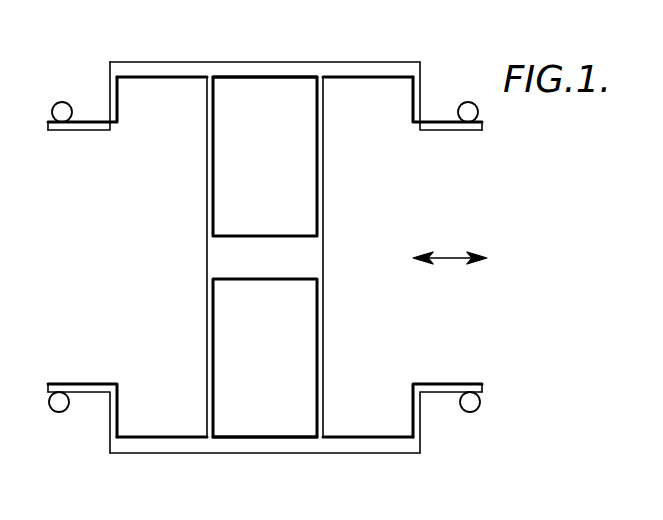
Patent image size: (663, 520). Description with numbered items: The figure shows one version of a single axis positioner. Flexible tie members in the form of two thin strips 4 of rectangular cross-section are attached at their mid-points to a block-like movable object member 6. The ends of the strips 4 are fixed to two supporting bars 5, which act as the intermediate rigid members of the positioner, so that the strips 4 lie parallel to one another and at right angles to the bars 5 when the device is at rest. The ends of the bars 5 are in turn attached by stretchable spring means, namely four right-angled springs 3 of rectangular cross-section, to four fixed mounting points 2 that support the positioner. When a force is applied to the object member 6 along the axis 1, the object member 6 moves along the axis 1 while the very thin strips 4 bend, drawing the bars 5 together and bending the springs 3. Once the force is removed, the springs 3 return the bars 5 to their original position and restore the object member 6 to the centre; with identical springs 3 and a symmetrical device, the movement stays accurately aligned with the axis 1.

The axis 1 is at (450, 255).
The fixed mounting points 2 is at (64, 102).
The right-angled springs 3 is at (110, 88).
The thin strips 4 is at (207, 341).
The supporting bars 5 is at (242, 62).
The object member 6 is at (232, 258).